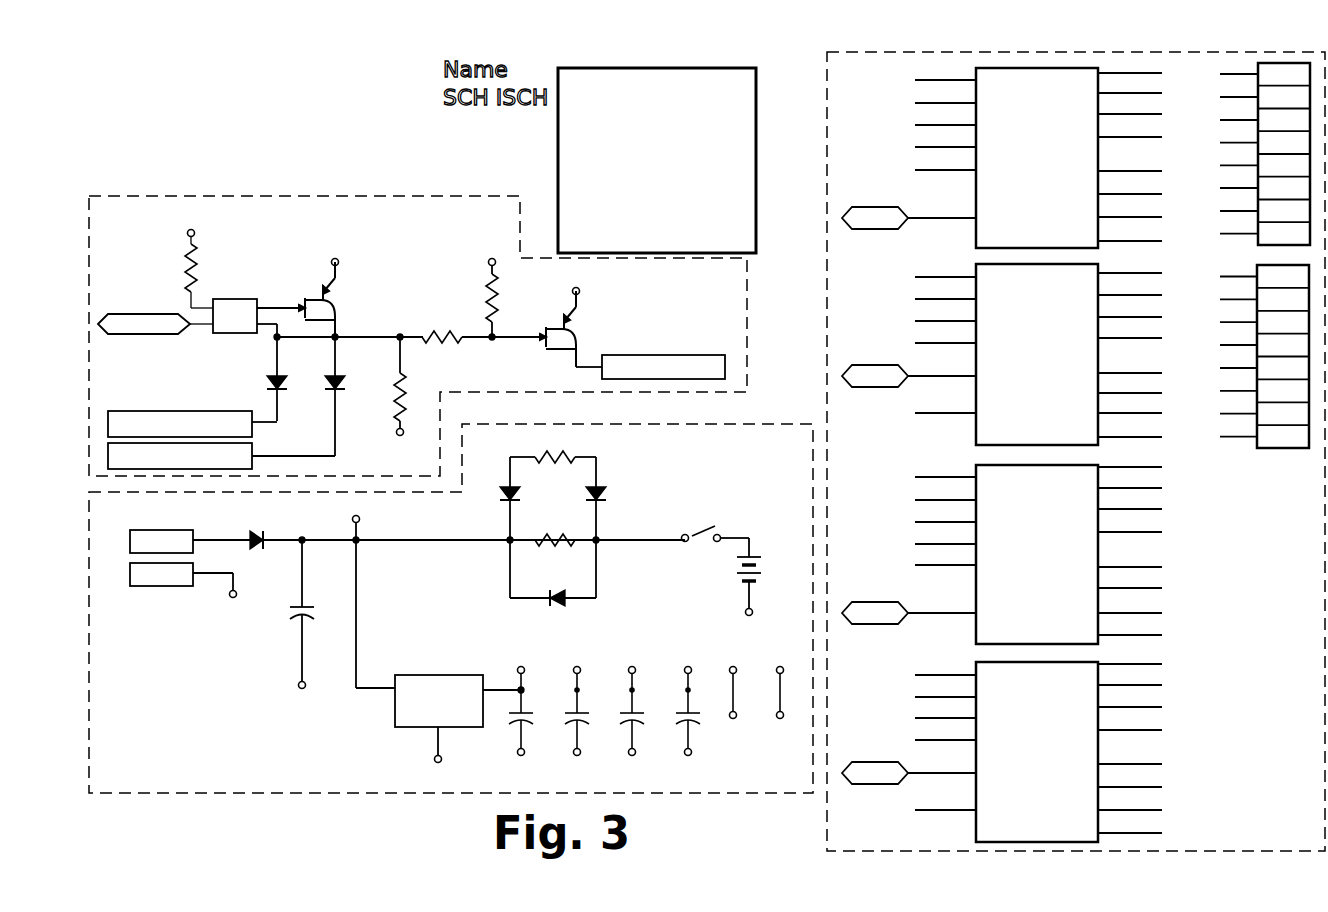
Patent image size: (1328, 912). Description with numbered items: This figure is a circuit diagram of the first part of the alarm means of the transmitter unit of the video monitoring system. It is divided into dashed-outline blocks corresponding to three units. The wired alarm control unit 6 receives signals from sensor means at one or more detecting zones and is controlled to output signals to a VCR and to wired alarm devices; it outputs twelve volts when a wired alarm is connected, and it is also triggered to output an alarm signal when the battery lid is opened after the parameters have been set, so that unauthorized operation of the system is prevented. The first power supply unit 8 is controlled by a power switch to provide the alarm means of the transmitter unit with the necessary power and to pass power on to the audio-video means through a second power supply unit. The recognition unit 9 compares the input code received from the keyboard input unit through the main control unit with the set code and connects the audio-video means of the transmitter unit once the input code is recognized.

The wired alarm control unit 6 is at (348, 195).
The first power supply unit 8 is at (340, 793).
The recognition unit 9 is at (826, 232).